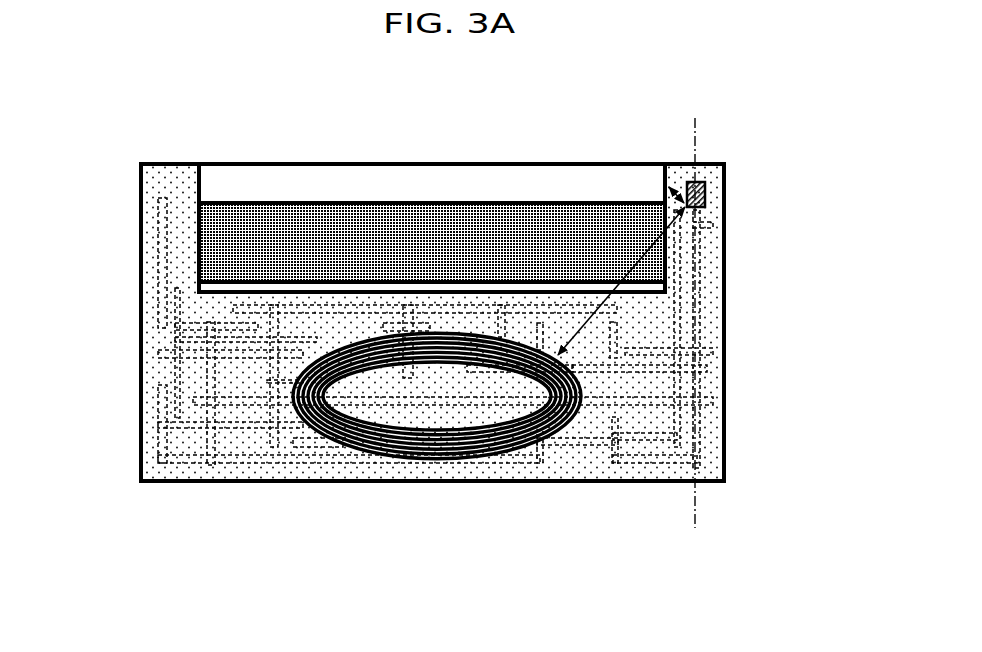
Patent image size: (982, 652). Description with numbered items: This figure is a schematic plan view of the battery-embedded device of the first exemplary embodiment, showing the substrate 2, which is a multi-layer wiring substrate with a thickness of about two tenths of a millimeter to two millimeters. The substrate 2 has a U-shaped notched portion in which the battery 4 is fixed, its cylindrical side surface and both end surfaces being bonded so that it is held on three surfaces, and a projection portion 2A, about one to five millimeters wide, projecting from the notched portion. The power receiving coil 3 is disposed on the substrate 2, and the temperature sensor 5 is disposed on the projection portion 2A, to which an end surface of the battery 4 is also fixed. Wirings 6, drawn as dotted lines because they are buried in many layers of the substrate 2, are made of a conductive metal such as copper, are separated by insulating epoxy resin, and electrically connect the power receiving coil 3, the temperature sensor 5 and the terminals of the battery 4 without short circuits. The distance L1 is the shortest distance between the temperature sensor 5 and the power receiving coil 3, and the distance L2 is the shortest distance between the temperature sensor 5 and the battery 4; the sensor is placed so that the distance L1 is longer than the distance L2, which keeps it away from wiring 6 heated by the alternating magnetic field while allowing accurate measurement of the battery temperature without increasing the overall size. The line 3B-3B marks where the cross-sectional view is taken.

The substrate 2 is at (241, 484).
The projection portion 2A is at (148, 235).
The power receiving coil 3 is at (437, 464).
The battery 4 is at (444, 226).
The temperature sensor 5 is at (709, 194).
The wiring 6 is at (636, 377).
The distance L1 is at (642, 268).
The distance L2 is at (674, 193).
The line 3B- 3B is at (695, 128).